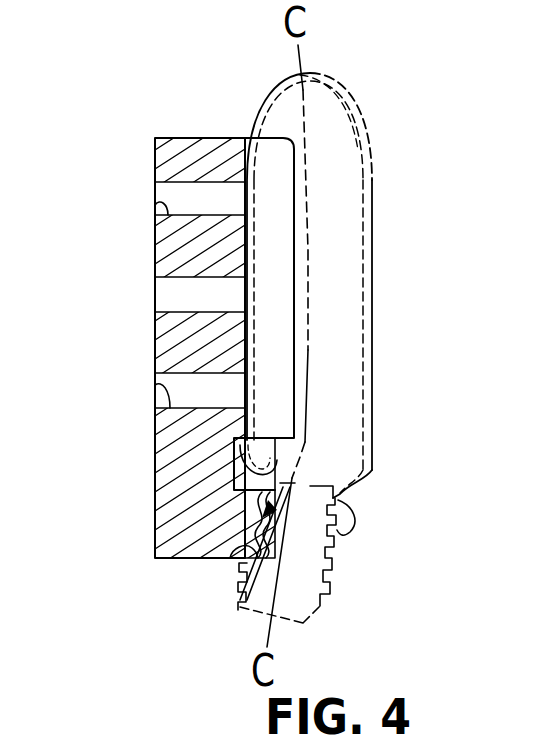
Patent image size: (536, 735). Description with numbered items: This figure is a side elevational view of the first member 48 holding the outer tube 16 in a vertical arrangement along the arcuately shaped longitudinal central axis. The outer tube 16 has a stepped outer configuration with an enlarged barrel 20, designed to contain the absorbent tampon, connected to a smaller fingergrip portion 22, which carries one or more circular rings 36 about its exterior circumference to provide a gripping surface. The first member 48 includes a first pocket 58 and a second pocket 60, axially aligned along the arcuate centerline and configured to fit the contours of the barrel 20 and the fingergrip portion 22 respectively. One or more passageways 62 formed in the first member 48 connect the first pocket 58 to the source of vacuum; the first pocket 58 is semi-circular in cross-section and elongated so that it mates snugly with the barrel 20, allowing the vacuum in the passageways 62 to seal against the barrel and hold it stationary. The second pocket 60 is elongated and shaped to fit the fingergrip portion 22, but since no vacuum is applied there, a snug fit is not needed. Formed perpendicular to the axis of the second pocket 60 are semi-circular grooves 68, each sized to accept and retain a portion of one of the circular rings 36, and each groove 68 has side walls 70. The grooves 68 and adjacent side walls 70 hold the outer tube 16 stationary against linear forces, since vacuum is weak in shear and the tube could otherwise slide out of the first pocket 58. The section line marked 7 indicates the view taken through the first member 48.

The first member 48 is at (146, 149).
The passageways 62 is at (158, 385).
The first pocket 58 is at (252, 158).
The outer tube 16 is at (376, 156).
The barrel 20 is at (369, 414).
The circular rings 36 is at (352, 516).
The fingergrip portion 22 is at (330, 603).
The second pocket 60 is at (270, 503).
The semi-circular grooves 68 is at (243, 550).
The side walls 70 is at (243, 603).
The section line 7- 7 is at (103, 480).